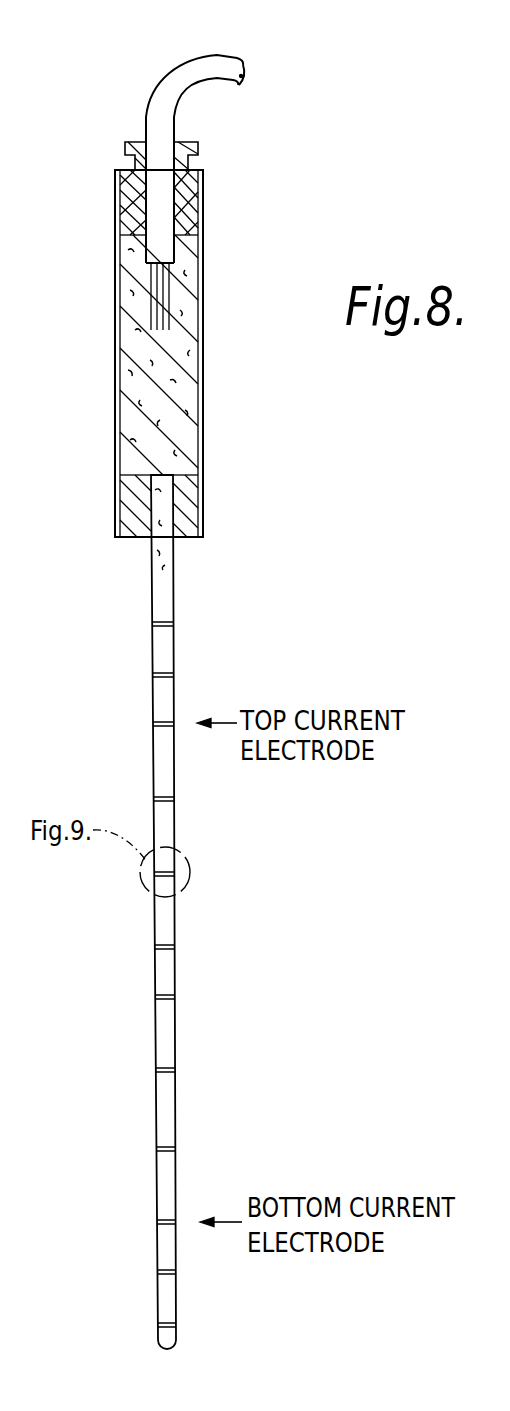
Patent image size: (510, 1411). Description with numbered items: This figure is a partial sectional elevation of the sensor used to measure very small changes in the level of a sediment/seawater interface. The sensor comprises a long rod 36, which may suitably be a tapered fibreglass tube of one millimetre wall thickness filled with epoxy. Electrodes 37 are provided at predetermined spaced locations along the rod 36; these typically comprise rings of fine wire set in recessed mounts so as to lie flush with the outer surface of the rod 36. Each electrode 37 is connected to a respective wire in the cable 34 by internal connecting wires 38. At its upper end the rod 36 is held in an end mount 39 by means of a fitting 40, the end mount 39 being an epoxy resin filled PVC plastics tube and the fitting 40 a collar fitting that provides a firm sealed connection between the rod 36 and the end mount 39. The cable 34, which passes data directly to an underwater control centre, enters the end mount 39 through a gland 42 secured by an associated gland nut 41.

The cable 34 is at (172, 87).
The rod 36 is at (163, 697).
The electrodes 37 is at (142, 872).
The internal connecting wires 38 is at (158, 300).
The end mount 39 is at (204, 394).
The fitting 40 is at (125, 510).
The gland nut 41 is at (125, 142).
The gland 42 is at (198, 221).